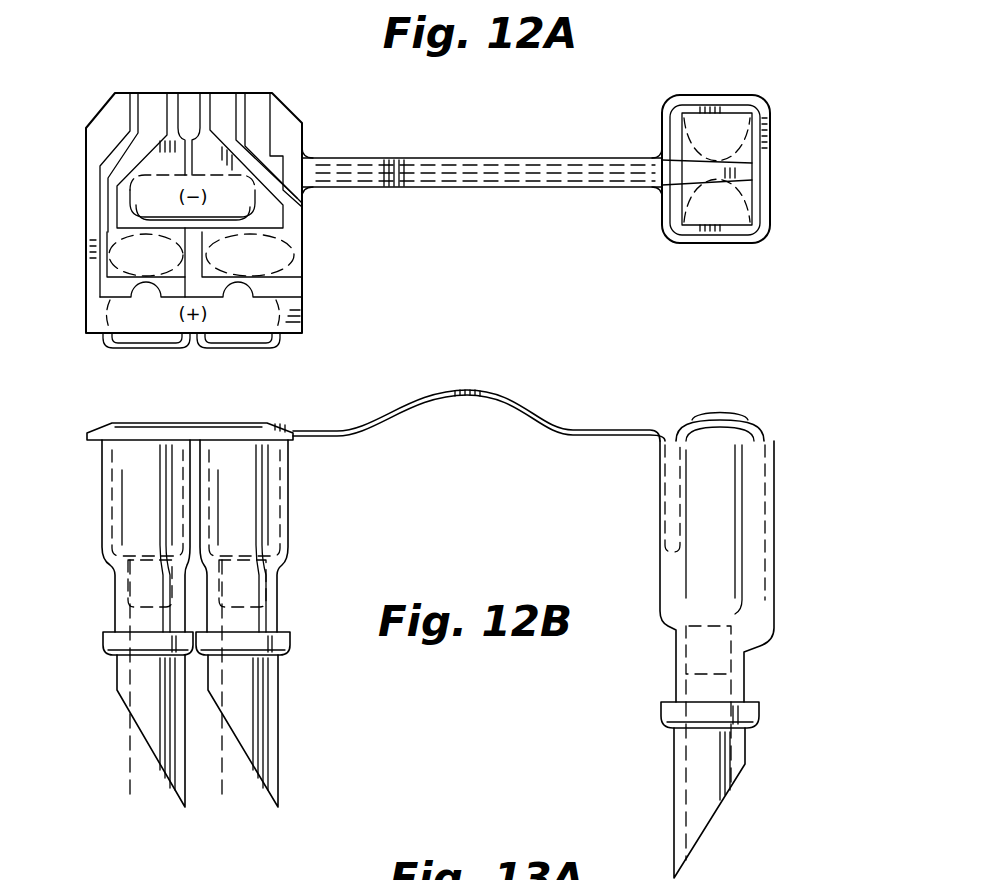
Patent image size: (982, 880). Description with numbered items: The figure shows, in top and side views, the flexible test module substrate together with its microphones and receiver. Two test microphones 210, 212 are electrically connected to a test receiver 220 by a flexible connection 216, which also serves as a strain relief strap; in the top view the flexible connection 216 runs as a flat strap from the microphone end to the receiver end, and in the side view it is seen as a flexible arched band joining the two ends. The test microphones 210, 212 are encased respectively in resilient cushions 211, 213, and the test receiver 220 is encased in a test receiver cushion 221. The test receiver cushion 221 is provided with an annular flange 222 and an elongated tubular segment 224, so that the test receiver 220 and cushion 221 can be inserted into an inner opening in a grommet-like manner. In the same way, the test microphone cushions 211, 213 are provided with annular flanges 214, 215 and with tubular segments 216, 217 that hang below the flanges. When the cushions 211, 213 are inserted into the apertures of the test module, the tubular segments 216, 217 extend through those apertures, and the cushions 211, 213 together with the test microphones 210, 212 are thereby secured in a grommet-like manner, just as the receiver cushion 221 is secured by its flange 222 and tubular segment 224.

In FIG. 12A, the test microphone 210 is at (120, 338).
In FIG. 12B, the test microphone 210 is at (120, 535).
In FIG. 12B, the resilient cushion 211 is at (105, 508).
In FIG. 12B, the test microphone 212 is at (285, 530).
In FIG. 12A, the resilient cushion 213 is at (262, 338).
In FIG. 12B, the resilient cushion 213 is at (288, 500).
In FIG. 12B, the annular flange 214 is at (103, 640).
In FIG. 12B, the annular flange 215 is at (290, 640).
In FIG. 12A, the flexible connection 216 is at (472, 187).
In FIG. 12B, the flexible connection 216 is at (148, 724).
In FIG. 12B, the tubular segment 217 is at (245, 752).
In FIG. 12A, the test receiver 220 is at (757, 163).
In FIG. 12B, the test receiver 220 is at (766, 508).
In FIG. 12A, the test receiver cushion 221 is at (770, 230).
In FIG. 12B, the test receiver cushion 221 is at (772, 564).
In FIG. 12B, the annular flange 222 is at (757, 711).
In FIG. 12B, the elongated tubular segment 224 is at (714, 804).